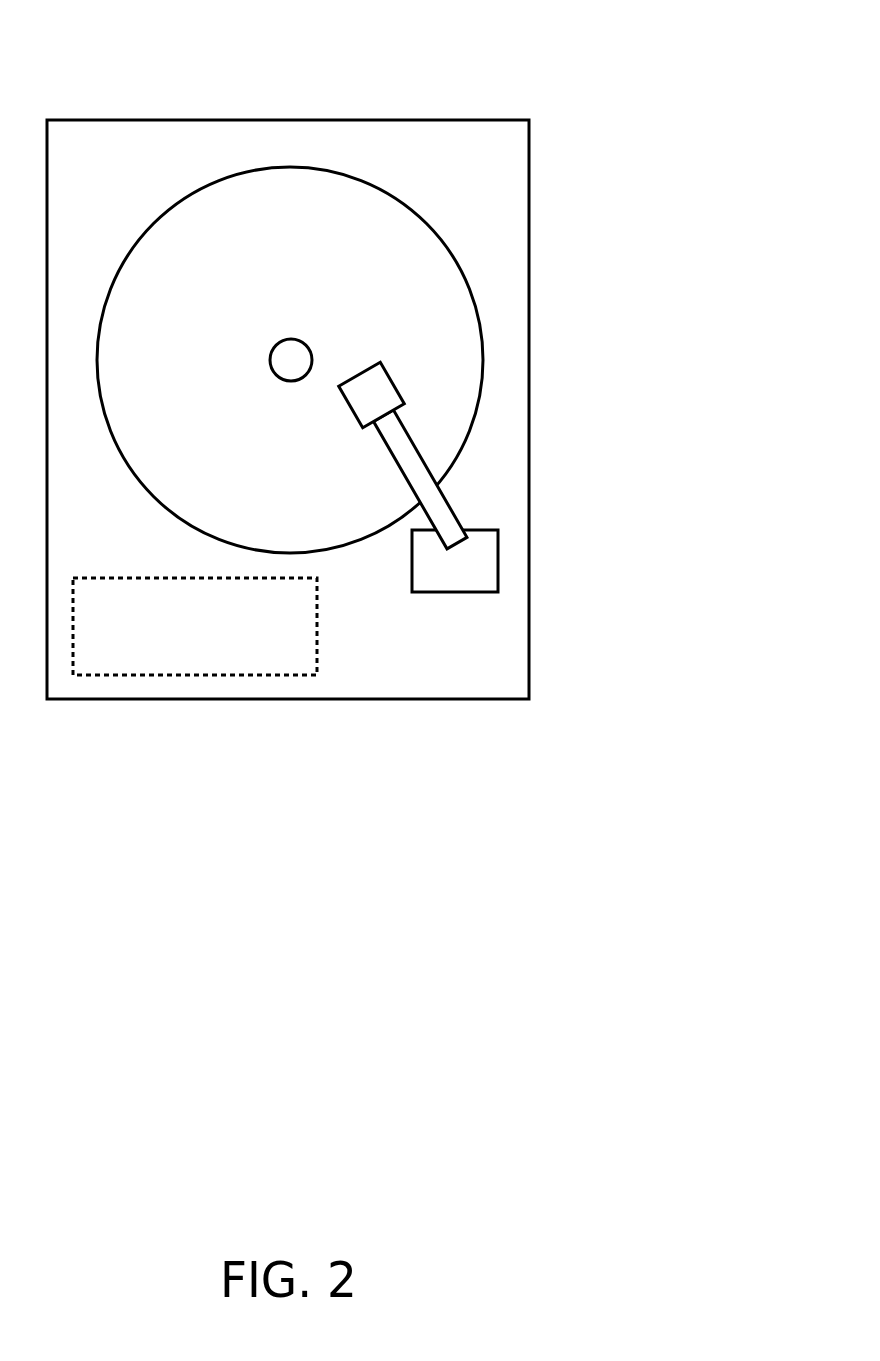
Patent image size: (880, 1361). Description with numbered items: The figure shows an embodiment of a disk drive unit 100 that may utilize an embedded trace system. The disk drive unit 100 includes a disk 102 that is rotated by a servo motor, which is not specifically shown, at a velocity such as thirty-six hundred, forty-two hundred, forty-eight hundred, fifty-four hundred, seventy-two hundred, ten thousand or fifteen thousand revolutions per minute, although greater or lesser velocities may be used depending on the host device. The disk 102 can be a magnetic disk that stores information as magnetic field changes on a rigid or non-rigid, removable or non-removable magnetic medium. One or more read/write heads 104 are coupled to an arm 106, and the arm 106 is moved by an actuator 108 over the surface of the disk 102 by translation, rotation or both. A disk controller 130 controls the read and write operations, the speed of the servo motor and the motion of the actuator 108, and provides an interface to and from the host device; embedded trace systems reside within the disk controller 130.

The disk drive unit 100 is at (542, 48).
The disk 102 is at (168, 210).
The read/write heads 104 is at (401, 401).
The arm 106 is at (425, 460).
The actuator 108 is at (411, 571).
The disk controller 130 is at (170, 661).